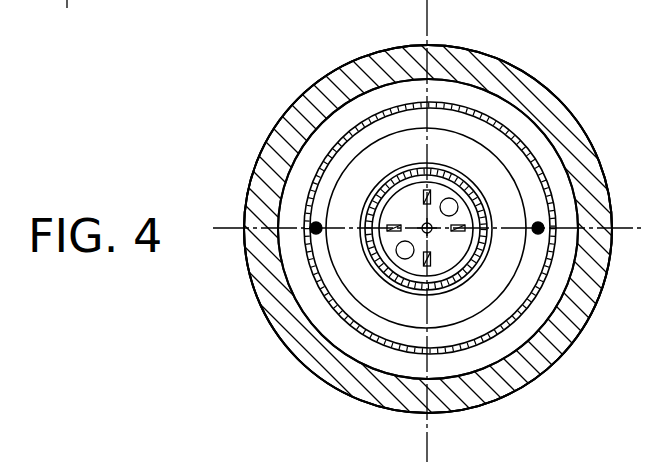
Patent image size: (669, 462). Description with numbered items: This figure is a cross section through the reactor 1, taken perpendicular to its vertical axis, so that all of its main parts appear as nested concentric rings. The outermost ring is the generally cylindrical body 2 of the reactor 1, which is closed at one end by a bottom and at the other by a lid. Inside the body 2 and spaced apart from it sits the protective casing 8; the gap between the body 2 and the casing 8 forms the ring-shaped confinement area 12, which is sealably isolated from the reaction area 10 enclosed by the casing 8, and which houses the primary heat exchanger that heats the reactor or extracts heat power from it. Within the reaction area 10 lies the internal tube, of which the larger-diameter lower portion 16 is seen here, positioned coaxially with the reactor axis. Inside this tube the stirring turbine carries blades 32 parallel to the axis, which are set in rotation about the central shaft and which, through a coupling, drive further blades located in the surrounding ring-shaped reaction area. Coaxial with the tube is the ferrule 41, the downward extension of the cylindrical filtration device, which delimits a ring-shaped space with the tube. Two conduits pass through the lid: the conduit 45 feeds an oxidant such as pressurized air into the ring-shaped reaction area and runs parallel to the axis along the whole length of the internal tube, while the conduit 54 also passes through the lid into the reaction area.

The reactor 1 is at (596, 310).
The body 2 is at (545, 100).
The protective casing 8 is at (563, 355).
The reaction area 10 is at (470, 97).
The confinement area 12 is at (548, 162).
The lower portion of internal tube 16 is at (285, 343).
The blades 32 is at (432, 262).
The ferrule 41 is at (428, 282).
The oxidant feed conduit 45 is at (312, 232).
The conduit 54 is at (545, 226).